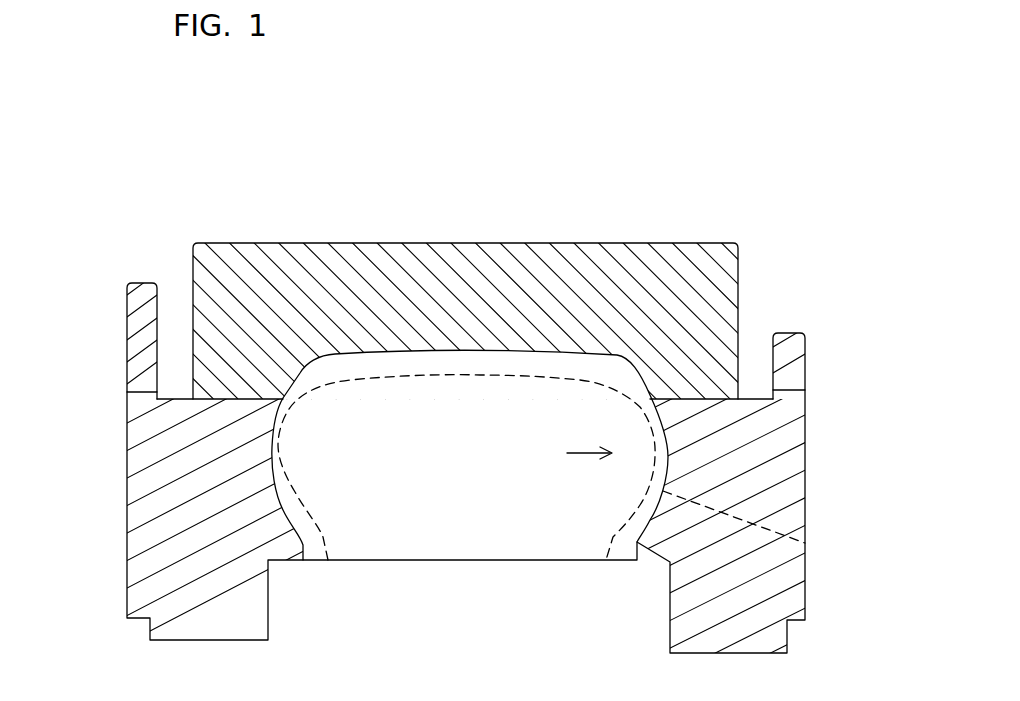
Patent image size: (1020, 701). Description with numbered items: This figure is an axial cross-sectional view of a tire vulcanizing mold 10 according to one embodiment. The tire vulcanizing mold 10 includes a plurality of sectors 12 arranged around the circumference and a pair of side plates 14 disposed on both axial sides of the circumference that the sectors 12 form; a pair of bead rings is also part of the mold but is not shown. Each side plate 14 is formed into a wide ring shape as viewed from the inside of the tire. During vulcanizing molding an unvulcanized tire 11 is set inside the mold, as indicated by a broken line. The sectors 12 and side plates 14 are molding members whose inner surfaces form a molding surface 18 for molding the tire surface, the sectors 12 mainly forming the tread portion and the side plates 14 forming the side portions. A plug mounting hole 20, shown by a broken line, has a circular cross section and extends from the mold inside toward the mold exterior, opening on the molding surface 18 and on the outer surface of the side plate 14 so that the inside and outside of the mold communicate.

The tire vulcanizing mold 10 is at (459, 151).
The unvulcanized tire 11 is at (617, 527).
The sector 12 is at (600, 254).
The side plate 14 is at (136, 437).
The molding surface 18 is at (271, 446).
The plug mounting hole 20 is at (777, 531).